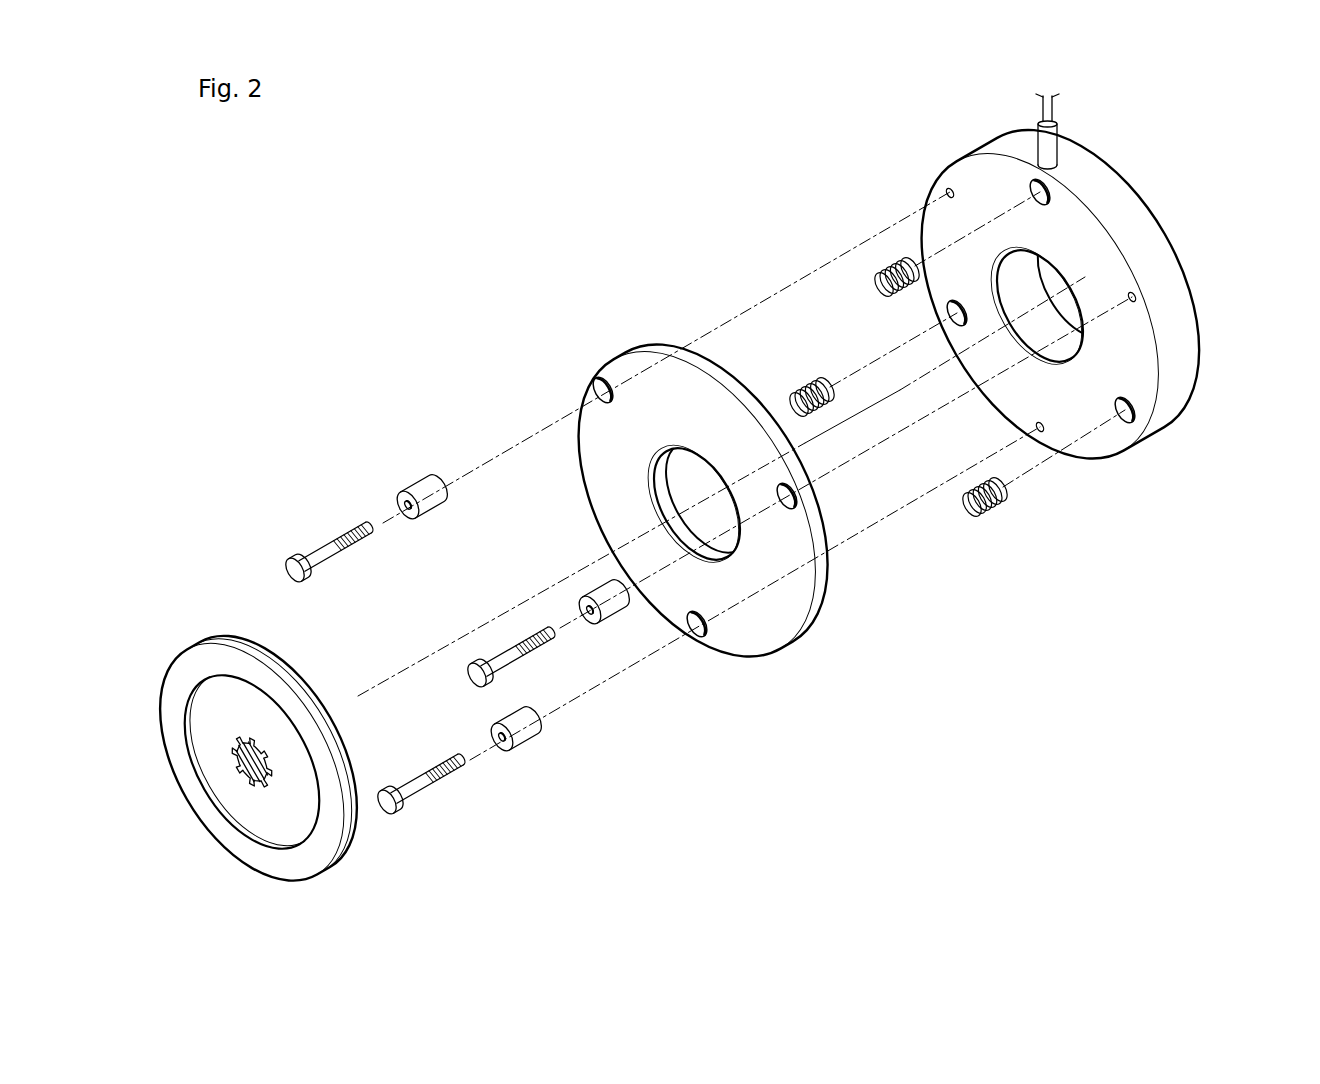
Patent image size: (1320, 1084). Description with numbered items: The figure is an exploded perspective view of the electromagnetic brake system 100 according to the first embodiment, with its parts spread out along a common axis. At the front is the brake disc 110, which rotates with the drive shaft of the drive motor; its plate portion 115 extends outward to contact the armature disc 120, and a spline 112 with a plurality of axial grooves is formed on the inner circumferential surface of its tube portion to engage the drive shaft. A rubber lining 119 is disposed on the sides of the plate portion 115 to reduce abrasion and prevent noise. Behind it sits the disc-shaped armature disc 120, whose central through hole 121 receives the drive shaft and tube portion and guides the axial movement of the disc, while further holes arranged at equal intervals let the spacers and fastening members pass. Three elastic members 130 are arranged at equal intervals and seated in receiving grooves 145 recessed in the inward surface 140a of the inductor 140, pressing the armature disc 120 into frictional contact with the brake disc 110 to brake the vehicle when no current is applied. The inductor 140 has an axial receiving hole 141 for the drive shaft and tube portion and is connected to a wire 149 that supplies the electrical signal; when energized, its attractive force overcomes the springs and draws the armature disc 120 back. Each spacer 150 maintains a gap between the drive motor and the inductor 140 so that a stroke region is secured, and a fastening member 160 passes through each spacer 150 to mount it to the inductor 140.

The electromagnetic brake system 100 is at (506, 266).
The brake disc 110 is at (237, 622).
The spline 112 is at (237, 765).
The plate portion 115 is at (213, 706).
The lining 119 is at (298, 870).
The armature disc 120 is at (660, 349).
The through hole 121 is at (684, 477).
The elastic member 130 is at (877, 277).
The inductor 140 is at (1160, 232).
The inward surface 140a is at (1138, 351).
The receiving hole 141 is at (1045, 289).
The receiving groove 145 is at (1047, 193).
The wire 149 is at (1050, 108).
The spacer 150 is at (430, 488).
The fastening member 160 is at (311, 561).